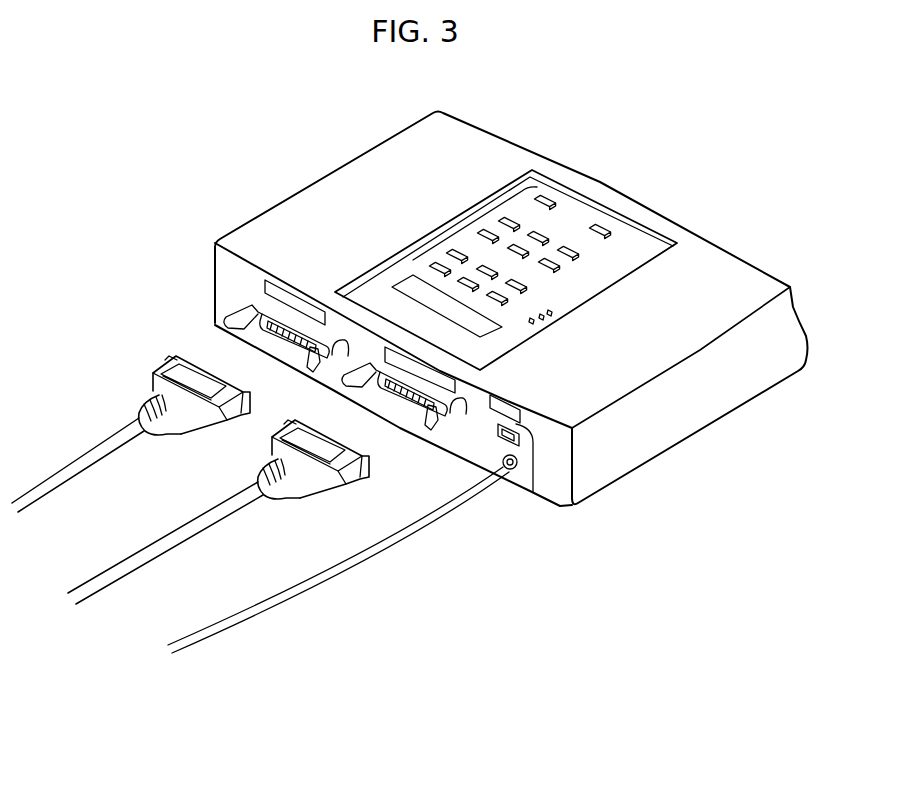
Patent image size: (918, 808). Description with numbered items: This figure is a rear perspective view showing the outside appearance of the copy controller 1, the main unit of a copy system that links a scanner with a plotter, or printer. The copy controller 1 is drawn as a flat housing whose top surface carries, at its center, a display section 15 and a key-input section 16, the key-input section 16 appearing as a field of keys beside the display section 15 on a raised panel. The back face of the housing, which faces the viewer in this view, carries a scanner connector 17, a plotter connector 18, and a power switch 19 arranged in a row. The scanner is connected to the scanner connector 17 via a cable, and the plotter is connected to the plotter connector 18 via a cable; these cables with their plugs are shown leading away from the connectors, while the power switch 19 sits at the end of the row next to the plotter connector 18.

The copy controller 1 is at (732, 275).
The display section 15 is at (500, 335).
The key-input section 16 is at (470, 228).
The scanner connector 17 is at (402, 397).
The plotter connector 18 is at (290, 339).
The power switch 19 is at (507, 438).